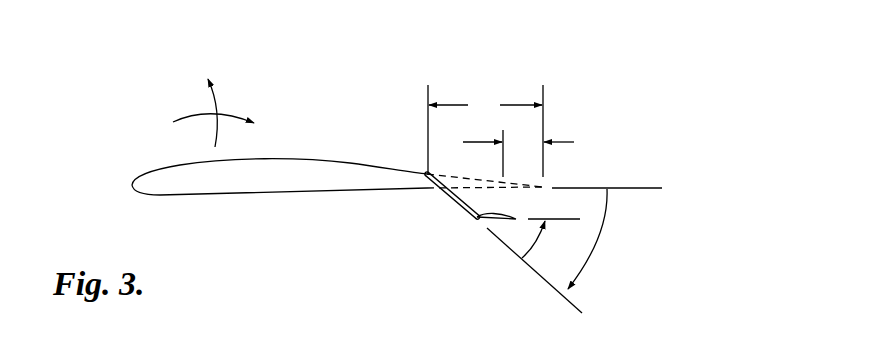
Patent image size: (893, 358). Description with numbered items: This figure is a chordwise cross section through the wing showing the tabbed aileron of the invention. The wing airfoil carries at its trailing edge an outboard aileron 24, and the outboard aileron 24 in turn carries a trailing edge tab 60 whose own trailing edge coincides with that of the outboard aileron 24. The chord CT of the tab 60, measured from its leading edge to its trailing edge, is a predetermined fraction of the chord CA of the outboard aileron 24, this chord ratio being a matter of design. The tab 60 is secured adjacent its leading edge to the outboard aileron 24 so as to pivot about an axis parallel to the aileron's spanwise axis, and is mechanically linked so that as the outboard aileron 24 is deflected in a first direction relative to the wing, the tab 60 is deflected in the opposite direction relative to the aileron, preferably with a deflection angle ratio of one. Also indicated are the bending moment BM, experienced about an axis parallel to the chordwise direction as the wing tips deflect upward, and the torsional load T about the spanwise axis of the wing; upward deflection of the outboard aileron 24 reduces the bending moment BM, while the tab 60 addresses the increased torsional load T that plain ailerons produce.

The outboard aileron 24 is at (453, 203).
The trailing edge tab 60 is at (483, 228).
The bending moment BM is at (232, 103).
The torsional load T is at (201, 120).
The chord of the outboard aileron CA is at (485, 107).
The chord of the tab CT is at (532, 145).